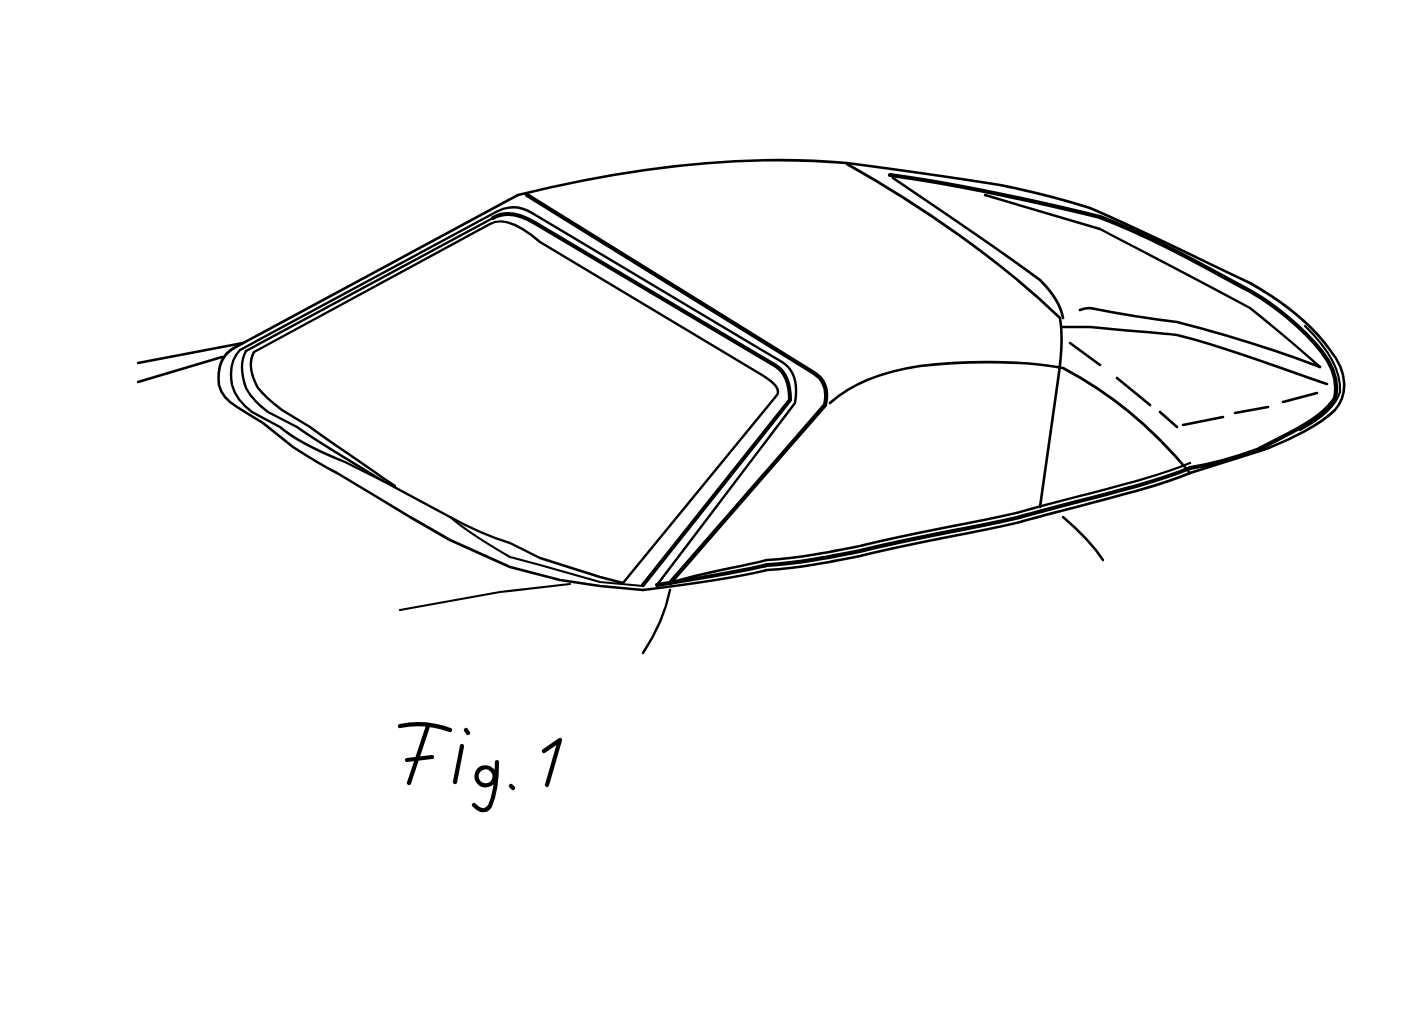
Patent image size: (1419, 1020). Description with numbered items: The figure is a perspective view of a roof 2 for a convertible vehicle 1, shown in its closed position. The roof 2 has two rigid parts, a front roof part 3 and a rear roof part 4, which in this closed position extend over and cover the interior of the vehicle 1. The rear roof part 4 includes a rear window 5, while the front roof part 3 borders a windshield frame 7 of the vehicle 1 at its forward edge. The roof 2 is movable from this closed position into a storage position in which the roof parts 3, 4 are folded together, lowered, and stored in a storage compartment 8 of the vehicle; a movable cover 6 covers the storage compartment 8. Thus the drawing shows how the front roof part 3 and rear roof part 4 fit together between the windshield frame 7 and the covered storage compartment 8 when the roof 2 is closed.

The convertible vehicle 1 is at (308, 200).
The roof 2 is at (794, 150).
The front roof part 3 is at (693, 185).
The rear roof part 4 is at (1013, 188).
The rear window 5 is at (1080, 237).
The movable cover 6 is at (1233, 413).
The windshield frame 7 is at (677, 292).
The storage compartment 8 is at (1305, 417).